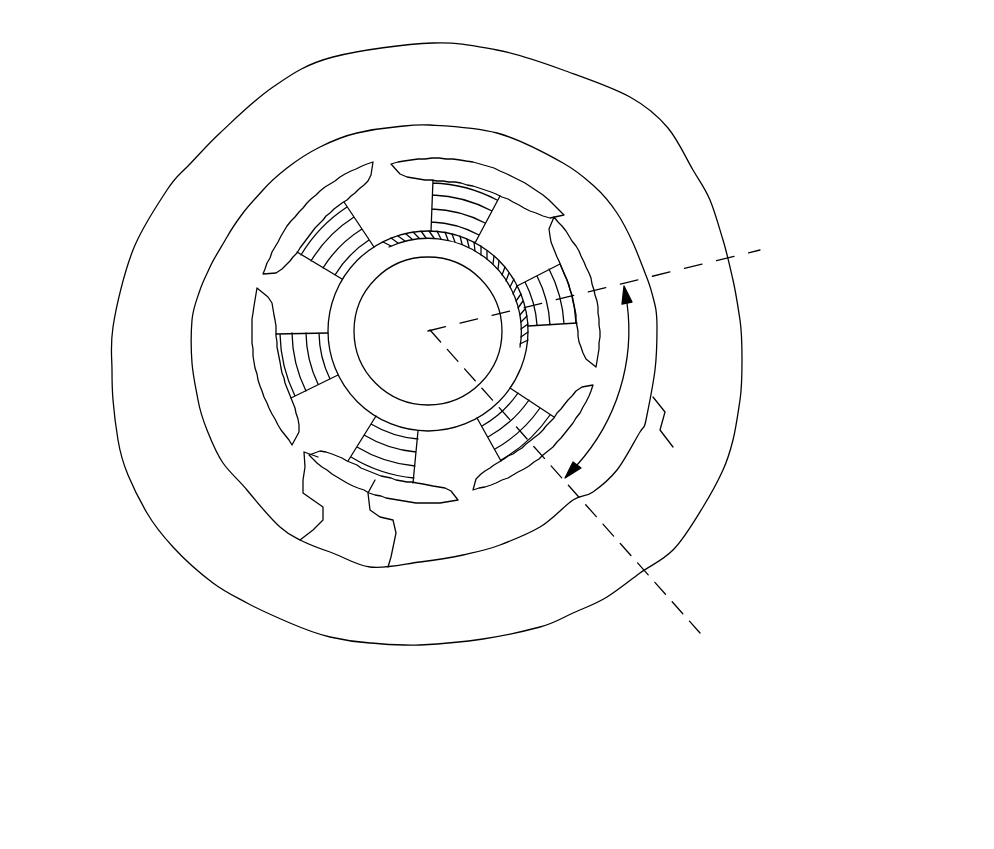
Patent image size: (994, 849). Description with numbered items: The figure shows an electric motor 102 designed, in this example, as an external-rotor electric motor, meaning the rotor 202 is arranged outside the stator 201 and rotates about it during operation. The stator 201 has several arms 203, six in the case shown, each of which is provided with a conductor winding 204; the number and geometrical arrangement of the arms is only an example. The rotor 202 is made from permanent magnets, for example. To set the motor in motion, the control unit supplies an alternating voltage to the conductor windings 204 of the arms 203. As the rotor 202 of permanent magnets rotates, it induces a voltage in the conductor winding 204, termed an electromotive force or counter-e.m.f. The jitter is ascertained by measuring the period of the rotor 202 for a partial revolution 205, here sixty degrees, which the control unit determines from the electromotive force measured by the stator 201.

The electric motor 102 is at (137, 111).
The stator 201 is at (356, 422).
The rotor 202 is at (630, 130).
The arms 203 is at (396, 532).
The conductor winding 204 is at (322, 508).
The partial revolution 205 is at (673, 447).